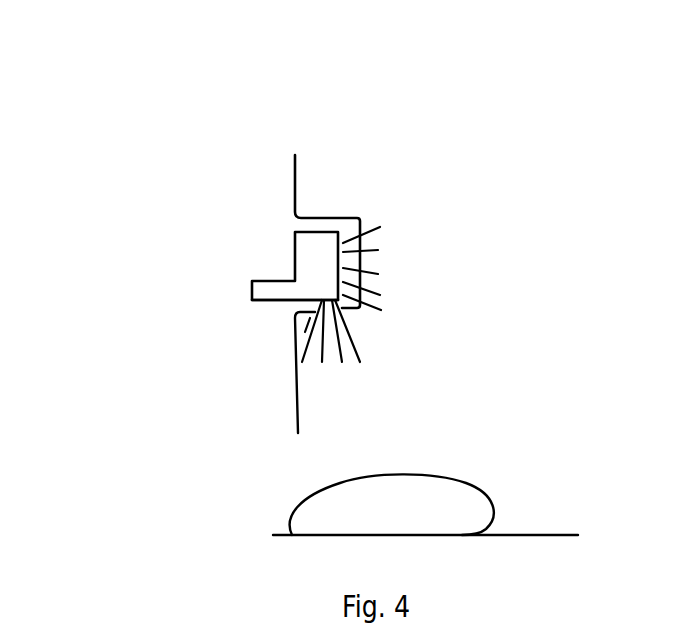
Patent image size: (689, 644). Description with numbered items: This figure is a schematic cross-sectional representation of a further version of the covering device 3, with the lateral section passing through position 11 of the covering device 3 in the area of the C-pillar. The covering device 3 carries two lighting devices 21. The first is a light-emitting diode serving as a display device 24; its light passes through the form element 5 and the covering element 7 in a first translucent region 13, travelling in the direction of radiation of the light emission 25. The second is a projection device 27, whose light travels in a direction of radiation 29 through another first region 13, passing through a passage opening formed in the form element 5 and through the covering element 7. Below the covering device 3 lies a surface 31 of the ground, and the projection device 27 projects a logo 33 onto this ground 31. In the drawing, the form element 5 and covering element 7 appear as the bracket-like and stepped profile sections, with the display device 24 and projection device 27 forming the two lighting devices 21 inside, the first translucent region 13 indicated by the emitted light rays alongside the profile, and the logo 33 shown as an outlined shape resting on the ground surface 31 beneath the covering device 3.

The covering device 3 is at (211, 117).
The position 11 is at (360, 118).
The form element 5 is at (351, 228).
The covering element 7 is at (318, 215).
The lighting devices 21 is at (195, 299).
The display device 24 is at (310, 252).
The projection device 27 is at (318, 285).
The first translucent region 13 is at (432, 298).
The light emission 25 is at (392, 272).
The direction of radiation 29 is at (322, 372).
The logo 33 is at (415, 487).
The surface of the ground 31 is at (517, 532).